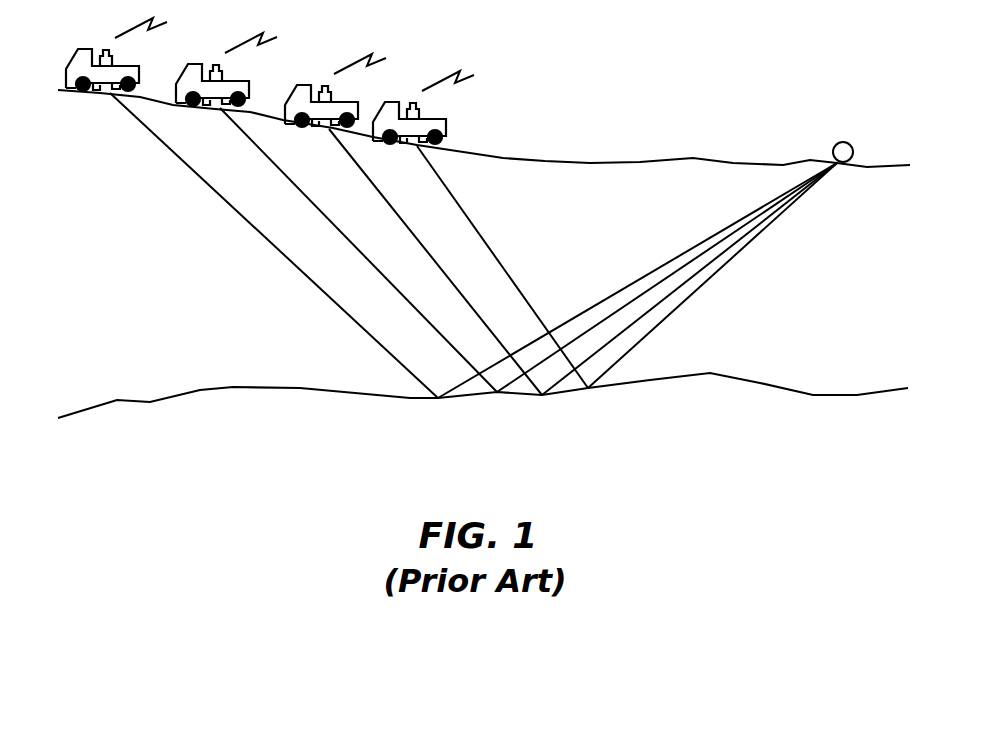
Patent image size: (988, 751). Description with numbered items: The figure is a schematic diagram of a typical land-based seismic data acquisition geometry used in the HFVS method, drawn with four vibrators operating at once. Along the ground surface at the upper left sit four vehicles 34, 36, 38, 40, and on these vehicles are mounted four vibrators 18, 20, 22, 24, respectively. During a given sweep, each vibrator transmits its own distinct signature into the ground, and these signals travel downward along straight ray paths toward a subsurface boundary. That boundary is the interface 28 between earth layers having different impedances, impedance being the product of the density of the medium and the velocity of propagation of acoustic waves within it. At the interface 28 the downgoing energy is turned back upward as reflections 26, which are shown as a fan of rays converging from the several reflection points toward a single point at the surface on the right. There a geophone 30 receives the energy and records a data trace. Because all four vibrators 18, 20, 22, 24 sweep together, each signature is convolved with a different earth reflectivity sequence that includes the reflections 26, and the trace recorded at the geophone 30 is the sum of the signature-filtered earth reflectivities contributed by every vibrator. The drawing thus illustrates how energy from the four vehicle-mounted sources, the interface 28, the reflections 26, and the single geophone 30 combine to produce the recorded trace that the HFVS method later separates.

The vibrator 18 is at (98, 95).
The vibrator 20 is at (215, 112).
The vibrator 22 is at (322, 132).
The vibrator 24 is at (413, 148).
The reflections 26 is at (722, 257).
The interface 28 is at (197, 392).
The geophone 30 is at (851, 145).
The vehicle 34 is at (87, 48).
The vehicle 36 is at (197, 65).
The vehicle 38 is at (307, 88).
The vehicle 40 is at (399, 103).